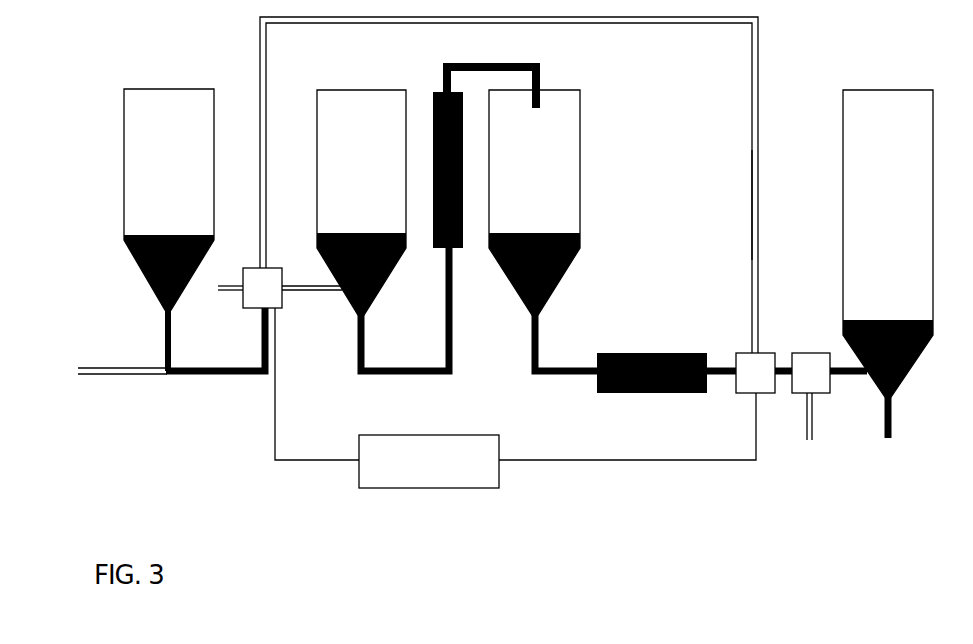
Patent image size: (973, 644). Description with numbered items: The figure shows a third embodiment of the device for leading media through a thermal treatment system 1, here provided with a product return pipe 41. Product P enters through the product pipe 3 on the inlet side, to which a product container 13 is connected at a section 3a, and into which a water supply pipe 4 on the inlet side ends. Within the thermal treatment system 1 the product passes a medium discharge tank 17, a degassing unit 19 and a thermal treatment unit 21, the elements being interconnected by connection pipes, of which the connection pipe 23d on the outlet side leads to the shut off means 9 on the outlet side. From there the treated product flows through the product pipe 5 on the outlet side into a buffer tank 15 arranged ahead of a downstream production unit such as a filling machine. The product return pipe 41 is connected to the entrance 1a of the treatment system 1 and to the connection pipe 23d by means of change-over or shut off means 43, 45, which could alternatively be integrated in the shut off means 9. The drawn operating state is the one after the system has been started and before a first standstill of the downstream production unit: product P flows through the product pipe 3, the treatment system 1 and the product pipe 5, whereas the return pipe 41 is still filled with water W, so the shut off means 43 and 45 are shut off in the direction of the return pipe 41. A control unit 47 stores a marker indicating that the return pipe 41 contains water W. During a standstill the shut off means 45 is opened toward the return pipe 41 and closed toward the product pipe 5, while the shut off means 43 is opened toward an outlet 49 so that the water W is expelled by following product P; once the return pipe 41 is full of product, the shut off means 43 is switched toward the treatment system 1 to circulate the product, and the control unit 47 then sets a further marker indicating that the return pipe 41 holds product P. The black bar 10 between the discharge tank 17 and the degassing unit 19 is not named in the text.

The thermal treatment system 1 is at (633, 84).
The entrance 1a is at (332, 300).
The product pipe on the inlet side 3 is at (228, 378).
The section of the product pipe 3a is at (165, 347).
The water supply pipe 4 is at (93, 378).
The product pipe on the outlet side 5 is at (850, 378).
The shut off means on the outlet side 9 is at (811, 396).
The heat exchanger 10 is at (438, 95).
The product container 13 is at (169, 199).
The buffer tank 15 is at (888, 264).
The medium discharge tank 17 is at (361, 202).
The degassing unit 19 is at (534, 202).
The thermal treatment unit 21 is at (650, 353).
The connection pipe 23d is at (723, 378).
The product return pipe 41 is at (758, 78).
The shut off means 43 is at (262, 288).
The shut off means 45 is at (755, 373).
The control unit 47 is at (515, 398).
The outlet 49 is at (228, 293).
The product P is at (613, 394).
The water W is at (751, 210).